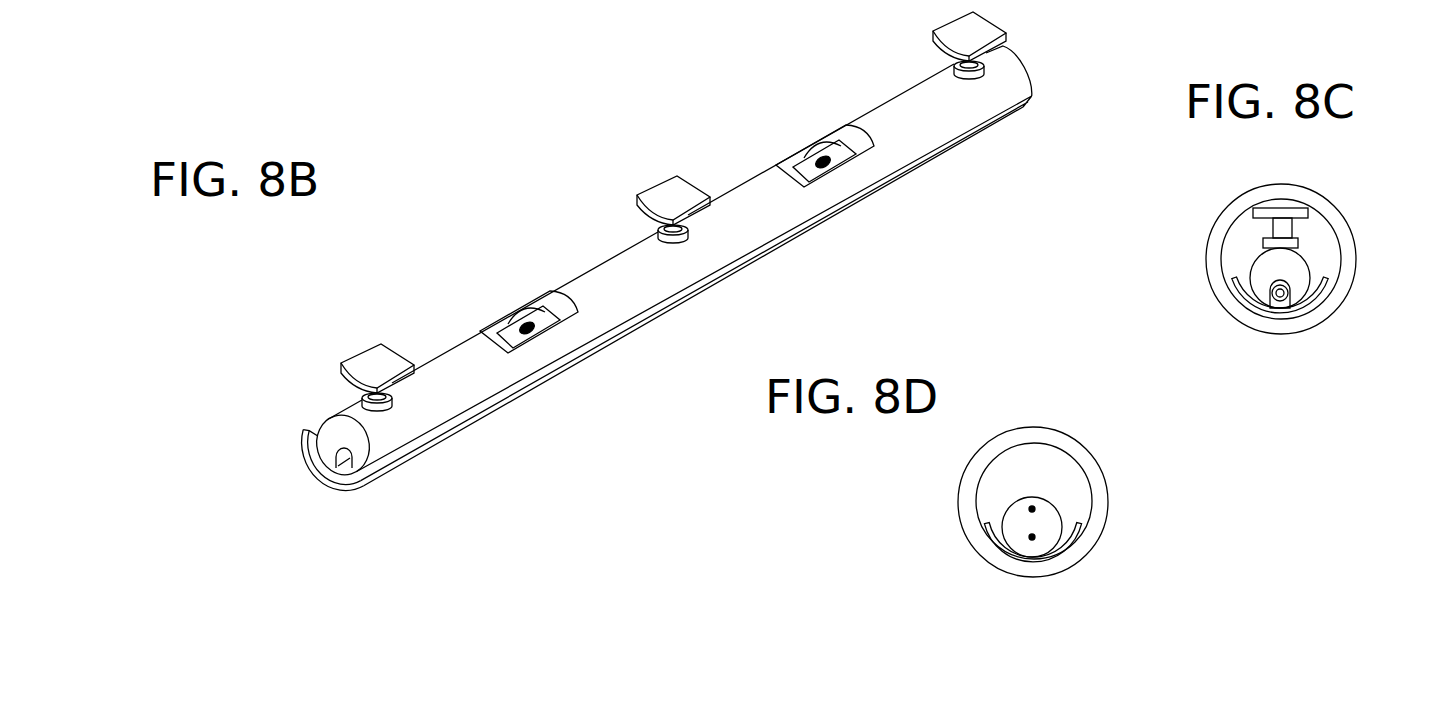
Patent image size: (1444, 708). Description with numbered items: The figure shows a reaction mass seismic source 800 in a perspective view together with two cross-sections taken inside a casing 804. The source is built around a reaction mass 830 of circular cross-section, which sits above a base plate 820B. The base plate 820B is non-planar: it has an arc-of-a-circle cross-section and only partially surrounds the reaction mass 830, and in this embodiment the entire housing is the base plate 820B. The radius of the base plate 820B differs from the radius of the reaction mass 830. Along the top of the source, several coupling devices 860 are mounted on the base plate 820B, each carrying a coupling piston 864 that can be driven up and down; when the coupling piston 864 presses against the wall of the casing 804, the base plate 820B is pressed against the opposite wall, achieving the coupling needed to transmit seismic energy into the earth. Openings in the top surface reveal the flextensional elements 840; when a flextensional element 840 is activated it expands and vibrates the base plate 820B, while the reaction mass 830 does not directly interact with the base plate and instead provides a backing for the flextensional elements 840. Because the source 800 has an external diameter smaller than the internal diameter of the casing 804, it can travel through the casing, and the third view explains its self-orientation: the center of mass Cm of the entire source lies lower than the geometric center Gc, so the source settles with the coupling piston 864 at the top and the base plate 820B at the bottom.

In FIG. 8B, the reaction mass seismic source 800 is at (643, 122).
In FIG. 8C, the reaction mass seismic source 800 is at (1323, 247).
In FIG. 8C, the casing 804 is at (1296, 187).
In FIG. 8D, the casing 804 is at (1050, 428).
In FIG. 8B, the base plate 820B is at (306, 436).
In FIG. 8C, the base plate 820B is at (1243, 298).
In FIG. 8B, the reaction mass 830 is at (457, 358).
In FIG. 8C, the reaction mass 830 is at (1302, 278).
In FIG. 8D, the reaction mass 830 is at (1052, 521).
In FIG. 8B, the flextensional element 840 is at (524, 282).
In FIG. 8B, the coupling device 860 is at (346, 340).
In FIG. 8C, the coupling device 860 is at (1255, 229).
In FIG. 8B, the coupling piston 864 is at (680, 192).
In FIG. 8C, the coupling piston 864 is at (1270, 205).
In FIG. 8D, the geometric center Gc is at (1030, 509).
In FIG. 8D, the center of mass Cm is at (1030, 538).